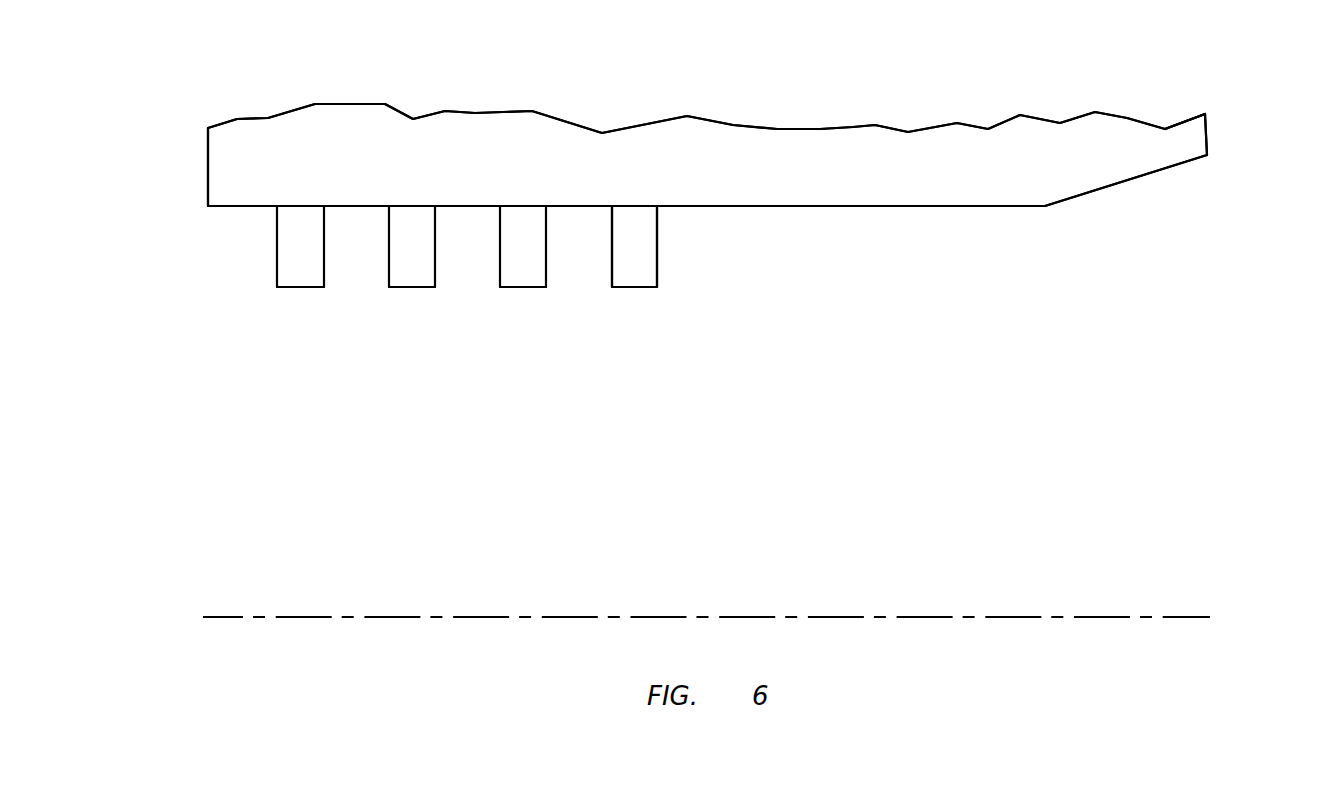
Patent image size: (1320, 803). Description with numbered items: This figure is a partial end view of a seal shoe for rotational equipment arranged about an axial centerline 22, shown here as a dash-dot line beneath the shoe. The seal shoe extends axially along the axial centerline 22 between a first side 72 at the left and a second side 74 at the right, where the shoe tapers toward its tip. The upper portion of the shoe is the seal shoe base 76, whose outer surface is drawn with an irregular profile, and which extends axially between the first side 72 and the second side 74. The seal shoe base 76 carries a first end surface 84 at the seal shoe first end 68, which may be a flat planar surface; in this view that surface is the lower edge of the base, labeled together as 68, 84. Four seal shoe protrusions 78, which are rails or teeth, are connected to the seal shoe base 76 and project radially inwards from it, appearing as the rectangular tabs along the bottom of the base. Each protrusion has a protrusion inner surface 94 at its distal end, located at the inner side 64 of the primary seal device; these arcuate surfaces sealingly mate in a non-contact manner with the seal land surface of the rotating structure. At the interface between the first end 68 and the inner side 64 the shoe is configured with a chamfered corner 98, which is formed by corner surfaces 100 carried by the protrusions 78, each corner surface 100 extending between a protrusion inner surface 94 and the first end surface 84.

The axial centerline 22 is at (1202, 617).
The inner side 64 is at (657, 298).
The first end 68 is at (707, 203).
The first end surface 84 is at (947, 202).
The first side 72 is at (207, 167).
The second side 74 is at (1208, 141).
The seal shoe base 76 is at (898, 127).
The seal shoe protrusions 78 is at (267, 292).
The protrusion inner surface 94 is at (302, 287).
The chamfered corner 98 is at (707, 238).
The corner surfaces 100 is at (292, 253).